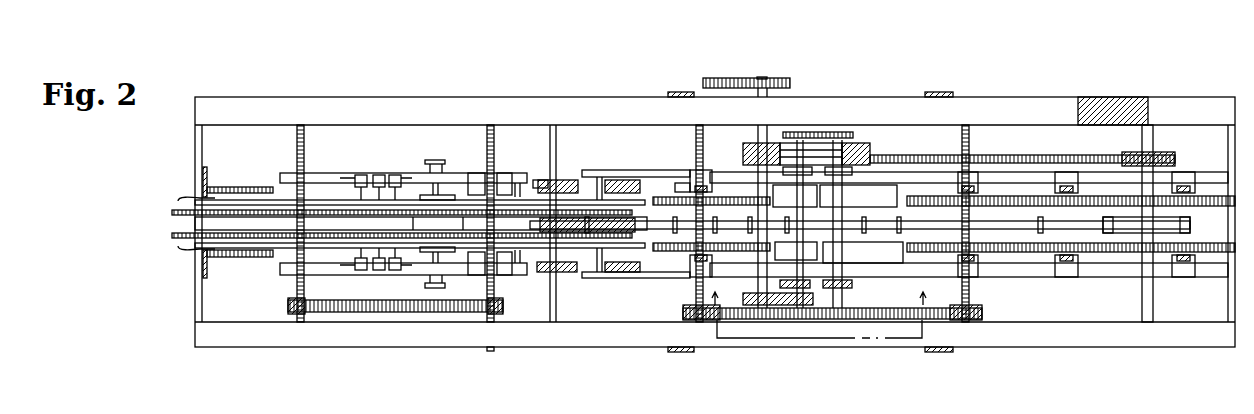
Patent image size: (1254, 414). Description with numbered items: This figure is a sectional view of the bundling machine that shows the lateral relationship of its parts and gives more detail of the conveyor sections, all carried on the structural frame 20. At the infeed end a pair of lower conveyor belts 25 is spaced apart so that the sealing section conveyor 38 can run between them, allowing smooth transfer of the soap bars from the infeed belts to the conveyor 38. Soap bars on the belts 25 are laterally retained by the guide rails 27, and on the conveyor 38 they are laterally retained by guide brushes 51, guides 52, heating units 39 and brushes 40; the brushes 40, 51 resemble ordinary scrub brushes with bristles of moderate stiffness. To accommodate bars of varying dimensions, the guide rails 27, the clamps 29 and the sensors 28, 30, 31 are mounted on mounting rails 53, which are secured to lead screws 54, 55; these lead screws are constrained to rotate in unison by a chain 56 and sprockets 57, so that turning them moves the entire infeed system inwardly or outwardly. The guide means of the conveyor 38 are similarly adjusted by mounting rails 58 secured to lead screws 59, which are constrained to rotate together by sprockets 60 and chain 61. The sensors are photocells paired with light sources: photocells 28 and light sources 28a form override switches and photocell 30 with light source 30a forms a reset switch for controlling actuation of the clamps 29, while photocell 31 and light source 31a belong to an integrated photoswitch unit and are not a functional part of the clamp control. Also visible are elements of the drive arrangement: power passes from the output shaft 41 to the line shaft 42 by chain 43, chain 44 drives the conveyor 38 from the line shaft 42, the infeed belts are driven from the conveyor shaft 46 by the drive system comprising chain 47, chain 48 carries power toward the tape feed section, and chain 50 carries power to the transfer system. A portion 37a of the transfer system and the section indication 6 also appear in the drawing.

The structural frame 20 is at (244, 342).
The conveyor belts 25 is at (180, 236).
The guide rails 27 is at (178, 198).
The sensors 28 is at (395, 270).
The light sources 28a is at (395, 175).
The clamps 29 is at (430, 168).
The sensor 30 is at (478, 270).
The light source 30a is at (476, 173).
The sensor 31 is at (505, 270).
The light source 31a is at (505, 173).
The drive shaft portion 37a is at (830, 200).
The conveyor 38 is at (1018, 233).
The heating units 39 is at (924, 200).
The brushes 40 is at (1118, 205).
The output shaft 41 is at (858, 140).
The line shaft 42 is at (764, 77).
The chain 43 is at (760, 140).
The chain 44 is at (916, 158).
The shaft 46 is at (557, 298).
The chain 47 is at (580, 182).
The chain 48 is at (730, 78).
The chain 50 is at (776, 321).
The guide brushes 51 is at (660, 172).
The guides 52 is at (788, 245).
The mounting rails 53 is at (280, 176).
The lead screw 54 is at (299, 132).
The lead screw 55 is at (490, 135).
The chain 56 is at (330, 300).
The sprockets 57 is at (292, 304).
The mounting rails 58 is at (1092, 178).
The lead screws 59 is at (695, 291).
The sprockets 60 is at (690, 306).
The chain 61 is at (865, 318).
The section line 6 is at (825, 298).